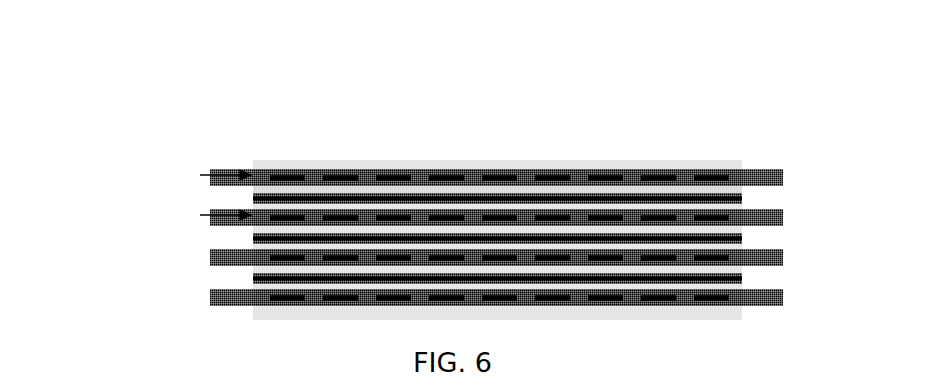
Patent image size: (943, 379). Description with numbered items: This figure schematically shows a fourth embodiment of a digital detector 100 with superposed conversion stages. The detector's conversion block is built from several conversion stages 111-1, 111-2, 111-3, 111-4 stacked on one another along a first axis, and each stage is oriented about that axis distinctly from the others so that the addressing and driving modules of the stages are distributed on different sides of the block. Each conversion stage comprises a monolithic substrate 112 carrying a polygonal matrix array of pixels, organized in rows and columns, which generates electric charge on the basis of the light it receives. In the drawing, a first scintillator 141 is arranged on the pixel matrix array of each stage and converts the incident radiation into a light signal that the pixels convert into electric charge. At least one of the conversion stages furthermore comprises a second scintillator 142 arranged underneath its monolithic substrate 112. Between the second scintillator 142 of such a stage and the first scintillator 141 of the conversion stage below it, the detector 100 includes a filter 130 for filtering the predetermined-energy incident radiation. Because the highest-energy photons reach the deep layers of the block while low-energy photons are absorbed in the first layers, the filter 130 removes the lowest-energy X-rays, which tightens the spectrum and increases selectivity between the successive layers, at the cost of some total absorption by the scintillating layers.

The digital detector 100 is at (236, 90).
The first conversion stage 111-1 is at (143, 158).
The second conversion stage 111-2 is at (143, 199).
The third conversion stage 111-3 is at (143, 239).
The fourth conversion stage 111-4 is at (143, 277).
The monolithic substrate 112 is at (739, 178).
The filter 130 is at (606, 197).
The first scintillator 141 is at (695, 163).
The second scintillator 142 is at (738, 190).